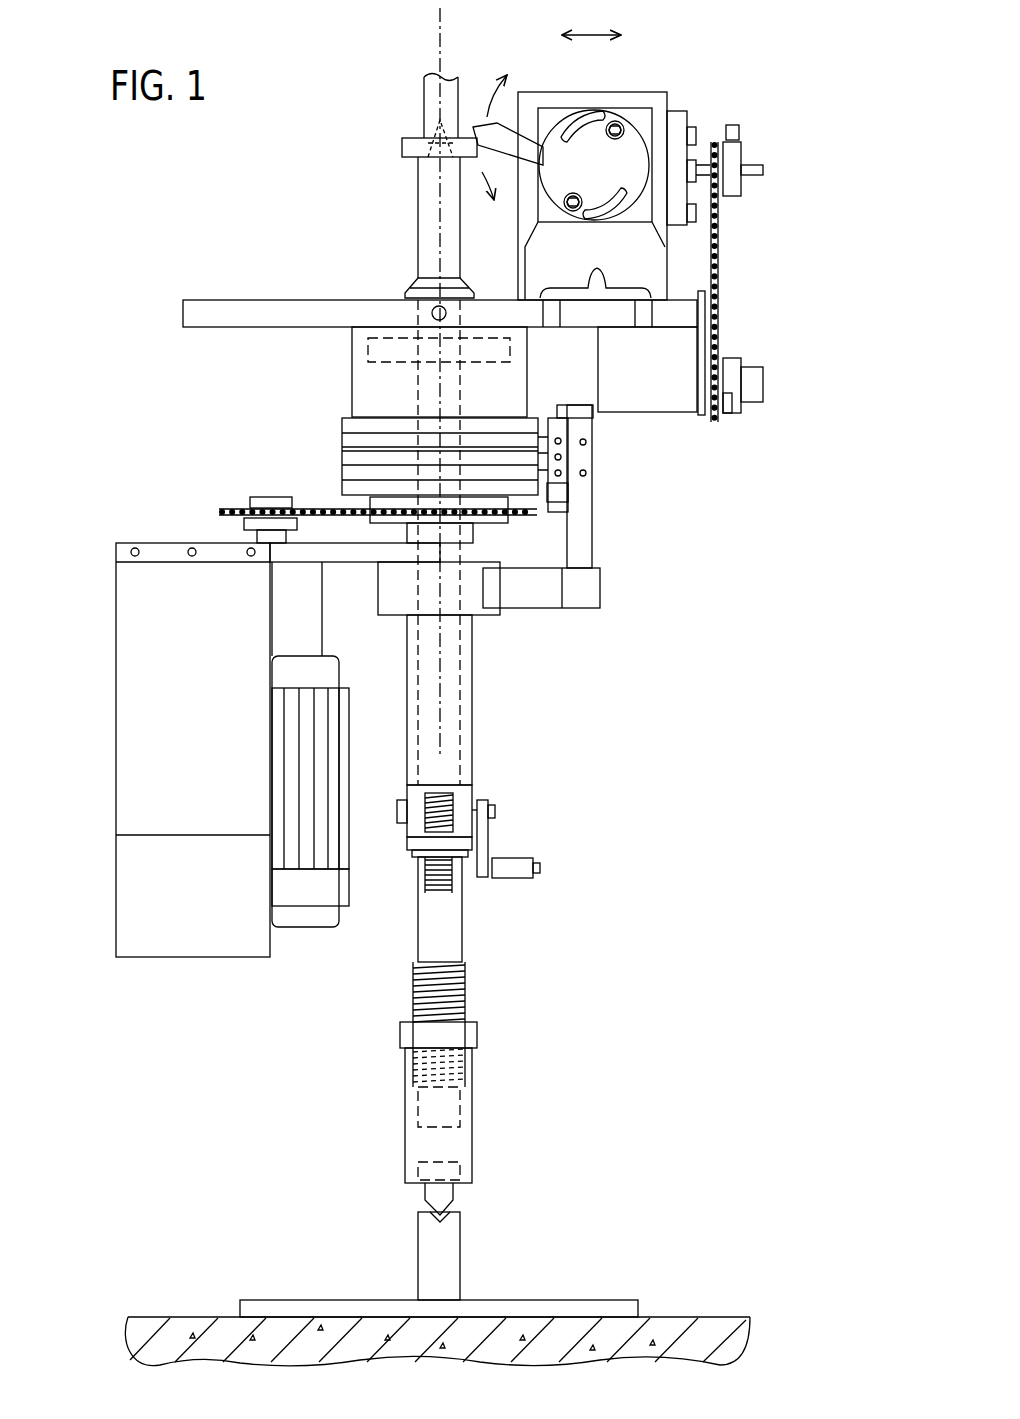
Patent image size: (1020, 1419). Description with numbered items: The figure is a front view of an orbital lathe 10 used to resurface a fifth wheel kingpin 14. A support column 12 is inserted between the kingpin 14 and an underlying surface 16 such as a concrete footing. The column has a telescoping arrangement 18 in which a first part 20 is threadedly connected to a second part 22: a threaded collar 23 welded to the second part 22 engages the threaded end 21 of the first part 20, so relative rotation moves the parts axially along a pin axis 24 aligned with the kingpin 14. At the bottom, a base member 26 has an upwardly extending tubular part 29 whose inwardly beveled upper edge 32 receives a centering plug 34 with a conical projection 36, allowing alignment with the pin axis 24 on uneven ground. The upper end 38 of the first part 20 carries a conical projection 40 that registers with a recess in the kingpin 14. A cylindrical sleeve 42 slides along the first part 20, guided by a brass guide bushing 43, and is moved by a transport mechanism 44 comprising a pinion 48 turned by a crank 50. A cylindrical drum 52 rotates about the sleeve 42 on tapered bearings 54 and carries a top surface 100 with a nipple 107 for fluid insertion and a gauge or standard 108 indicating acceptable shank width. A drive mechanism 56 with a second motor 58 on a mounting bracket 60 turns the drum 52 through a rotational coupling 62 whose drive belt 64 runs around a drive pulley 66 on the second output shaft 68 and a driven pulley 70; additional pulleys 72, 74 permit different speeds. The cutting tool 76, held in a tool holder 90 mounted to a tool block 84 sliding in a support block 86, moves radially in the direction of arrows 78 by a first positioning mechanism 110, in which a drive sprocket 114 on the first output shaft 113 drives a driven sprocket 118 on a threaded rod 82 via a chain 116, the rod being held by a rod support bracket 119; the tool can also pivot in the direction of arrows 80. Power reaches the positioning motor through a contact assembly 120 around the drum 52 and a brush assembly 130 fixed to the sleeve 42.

The orbital lathe 10 is at (781, 47).
The support column 12 is at (373, 1147).
The fifth wheel kingpin 14 is at (427, 103).
The underlying surface 16 is at (195, 1316).
The telescoping arrangement 18 is at (390, 1132).
The first part 20 is at (462, 910).
The threaded end 21 is at (465, 1095).
The second part 22 is at (472, 1133).
The threaded collar 23 is at (477, 1035).
The pin axis 24 is at (438, 698).
The base member 26 is at (490, 1287).
The tubular part 29 is at (418, 1272).
The inwardly beveled upper edge 32 is at (435, 1222).
The centering plug 34 is at (447, 1173).
The conical projection 36 is at (452, 1210).
The upper end 38 is at (418, 237).
The conical projection 40 is at (430, 131).
The cylindrical sleeve 42 is at (472, 672).
The guide bushing 43 is at (466, 285).
The transport mechanism 44 is at (566, 878).
The pinion 48 is at (440, 812).
The crank 50 is at (488, 833).
The cylindrical drum 52 is at (370, 395).
The tapered bearings 54 is at (368, 346).
The drive mechanism 56 is at (103, 959).
The second motor 58 is at (295, 753).
The mounting bracket 60 is at (212, 668).
The rotational coupling 62 is at (230, 503).
The drive belt 64 is at (318, 518).
The drive pulley 66 is at (249, 526).
The second output shaft 68 is at (270, 535).
The driven pulley 70 is at (390, 520).
The additional drive pulley 72 is at (270, 497).
The additional driven pulley 74 is at (488, 500).
The cutting tool 76 is at (503, 140).
The arrows 78 is at (593, 33).
The arrows 80 is at (487, 97).
The threaded rod 82 is at (753, 160).
The tool block 84 is at (642, 117).
The support block 86 is at (577, 92).
The tool holder 90 is at (606, 179).
The top surface 100 is at (253, 300).
The nipple 107 is at (432, 313).
The gauge or standard 108 is at (598, 268).
The first positioning mechanism 110 is at (783, 429).
The first output shaft 113 is at (754, 380).
The drive sprocket 114 is at (726, 415).
The chain 116 is at (719, 275).
The driven sprocket 118 is at (735, 184).
The rod support bracket 119 is at (677, 111).
The contact assembly 120 is at (322, 495).
The brush assembly 130 is at (627, 627).